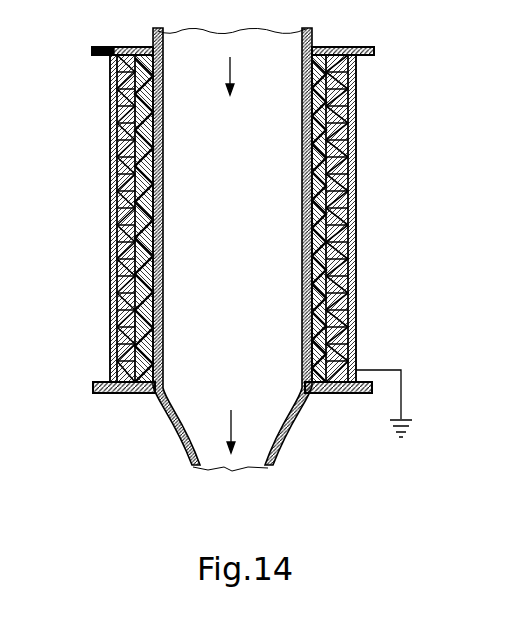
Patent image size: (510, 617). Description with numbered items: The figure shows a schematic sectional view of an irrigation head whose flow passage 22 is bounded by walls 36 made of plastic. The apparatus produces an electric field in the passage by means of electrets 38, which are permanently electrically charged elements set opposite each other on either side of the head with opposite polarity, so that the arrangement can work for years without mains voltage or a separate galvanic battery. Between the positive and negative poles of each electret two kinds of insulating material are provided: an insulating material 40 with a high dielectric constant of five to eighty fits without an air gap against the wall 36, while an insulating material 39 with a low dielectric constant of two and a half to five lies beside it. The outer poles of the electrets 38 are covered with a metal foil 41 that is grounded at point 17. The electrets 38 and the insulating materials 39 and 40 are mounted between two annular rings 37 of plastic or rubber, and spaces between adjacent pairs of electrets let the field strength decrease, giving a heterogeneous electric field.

The grounding point 17 is at (404, 403).
The flow channel 22 is at (266, 145).
The wall of the irrigation head 36 is at (152, 38).
The annular ring 37 is at (92, 52).
The electret 38 is at (110, 78).
The insulating material with low dielectric constant 39 is at (110, 157).
The insulating material with high dielectric constant 40 is at (110, 205).
The metal foil 41 is at (110, 250).